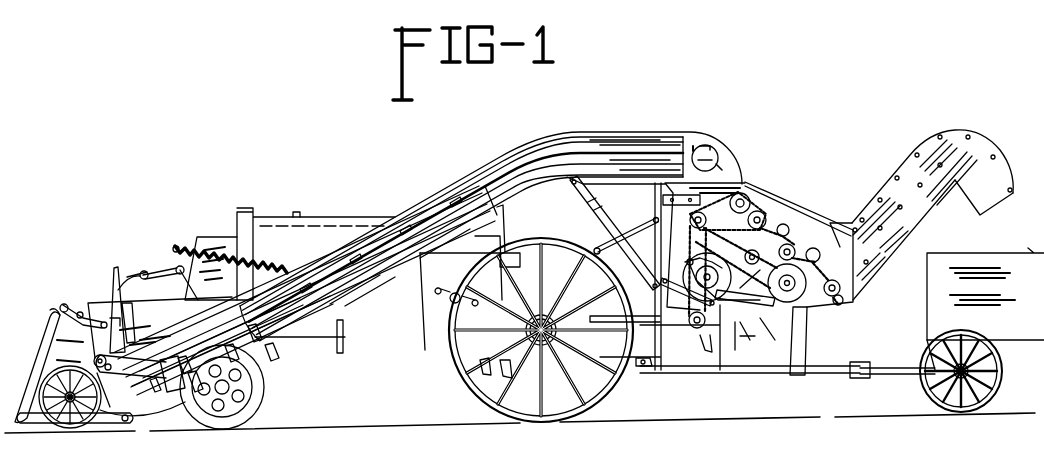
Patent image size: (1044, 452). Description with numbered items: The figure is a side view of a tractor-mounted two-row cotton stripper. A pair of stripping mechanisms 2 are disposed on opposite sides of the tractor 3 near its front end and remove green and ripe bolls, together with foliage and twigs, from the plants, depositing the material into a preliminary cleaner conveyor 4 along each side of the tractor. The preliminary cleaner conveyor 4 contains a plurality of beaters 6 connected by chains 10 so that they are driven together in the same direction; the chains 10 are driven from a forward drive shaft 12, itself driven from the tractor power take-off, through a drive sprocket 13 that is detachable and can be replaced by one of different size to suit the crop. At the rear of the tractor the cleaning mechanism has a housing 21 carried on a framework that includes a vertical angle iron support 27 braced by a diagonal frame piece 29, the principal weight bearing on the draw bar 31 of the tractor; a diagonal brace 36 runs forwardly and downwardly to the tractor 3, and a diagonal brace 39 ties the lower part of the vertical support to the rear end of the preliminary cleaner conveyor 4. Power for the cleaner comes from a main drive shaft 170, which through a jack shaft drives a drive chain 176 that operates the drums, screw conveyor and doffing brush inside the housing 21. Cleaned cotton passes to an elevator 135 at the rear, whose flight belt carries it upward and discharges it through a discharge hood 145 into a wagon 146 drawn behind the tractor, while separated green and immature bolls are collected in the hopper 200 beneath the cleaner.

The stripping mechanism 2 is at (145, 263).
The tractor 3 is at (307, 216).
The preliminary cleaner conveyor 4 is at (453, 183).
The beater 6 is at (744, 182).
The chain 10 is at (497, 208).
The forward drive shaft 12 is at (281, 340).
The drive sprocket 13 is at (255, 346).
The cleaner housing 21 is at (766, 194).
The vertical angle iron support 27 is at (651, 248).
The diagonal frame piece 29 is at (688, 286).
The draw bar 31 is at (645, 367).
The diagonal brace 36 is at (595, 250).
The diagonal brace 39 is at (594, 219).
The elevator 135 is at (898, 181).
The discharge hood 145 is at (978, 207).
The wagon 146 is at (964, 258).
The main drive shaft 170 is at (611, 300).
The drive chain 176 is at (690, 258).
The hopper 200 is at (770, 366).